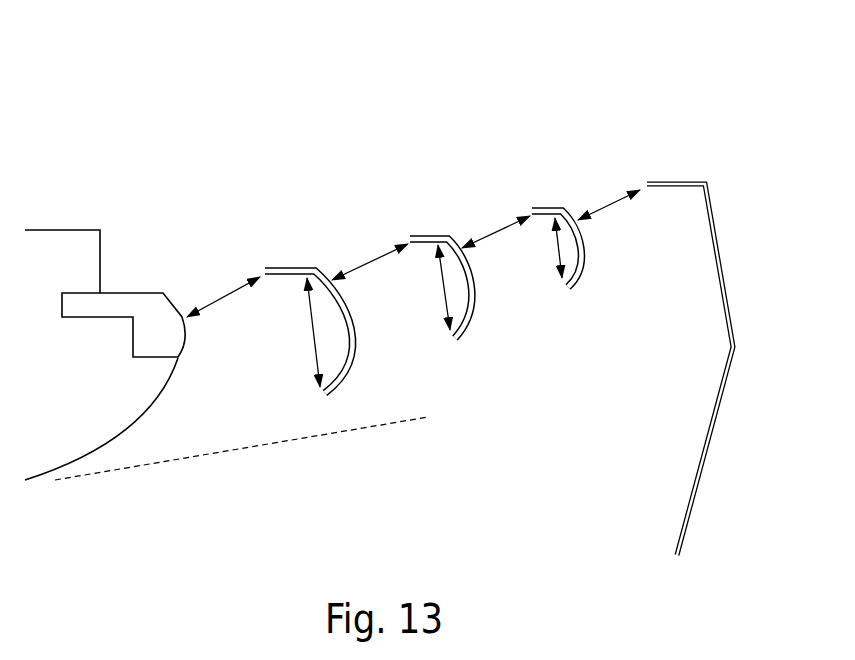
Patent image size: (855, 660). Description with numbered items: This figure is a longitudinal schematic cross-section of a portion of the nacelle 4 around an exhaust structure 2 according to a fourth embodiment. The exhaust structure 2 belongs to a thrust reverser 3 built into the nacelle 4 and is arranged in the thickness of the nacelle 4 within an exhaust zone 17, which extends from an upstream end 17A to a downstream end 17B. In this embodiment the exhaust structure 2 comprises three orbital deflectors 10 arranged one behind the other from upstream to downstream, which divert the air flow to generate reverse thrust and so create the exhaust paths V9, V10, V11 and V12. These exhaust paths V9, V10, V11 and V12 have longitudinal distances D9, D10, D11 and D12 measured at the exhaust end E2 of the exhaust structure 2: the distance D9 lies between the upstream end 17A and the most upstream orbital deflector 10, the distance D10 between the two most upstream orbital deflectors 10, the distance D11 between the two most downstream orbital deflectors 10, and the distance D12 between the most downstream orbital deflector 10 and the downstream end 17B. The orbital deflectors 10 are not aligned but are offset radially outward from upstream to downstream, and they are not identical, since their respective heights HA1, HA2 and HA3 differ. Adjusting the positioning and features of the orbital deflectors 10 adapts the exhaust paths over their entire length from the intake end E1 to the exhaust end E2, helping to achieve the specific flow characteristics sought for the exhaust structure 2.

The exhaust structure 2 is at (405, 200).
The thrust reverser 3 is at (630, 135).
The nacelle 4 is at (62, 230).
The orbital deflector 10 is at (340, 382).
The exhaust zone 17 is at (288, 228).
The upstream end of the exhaust zone 17A is at (167, 268).
The downstream end of the exhaust zone 17B is at (648, 174).
The distance D9 is at (215, 297).
The distance D10 is at (357, 243).
The distance D11 is at (487, 225).
The distance D12 is at (605, 206).
The height of orbital deflector HA1 is at (308, 328).
The height of orbital deflector HA2 is at (445, 287).
The height of orbital deflector HA3 is at (560, 251).
The intake end E1 is at (328, 402).
The exhaust end E2 is at (430, 222).
The exhaust path V9 is at (264, 380).
The exhaust path V10 is at (415, 336).
The exhaust path V11 is at (529, 294).
The exhaust path V12 is at (627, 248).